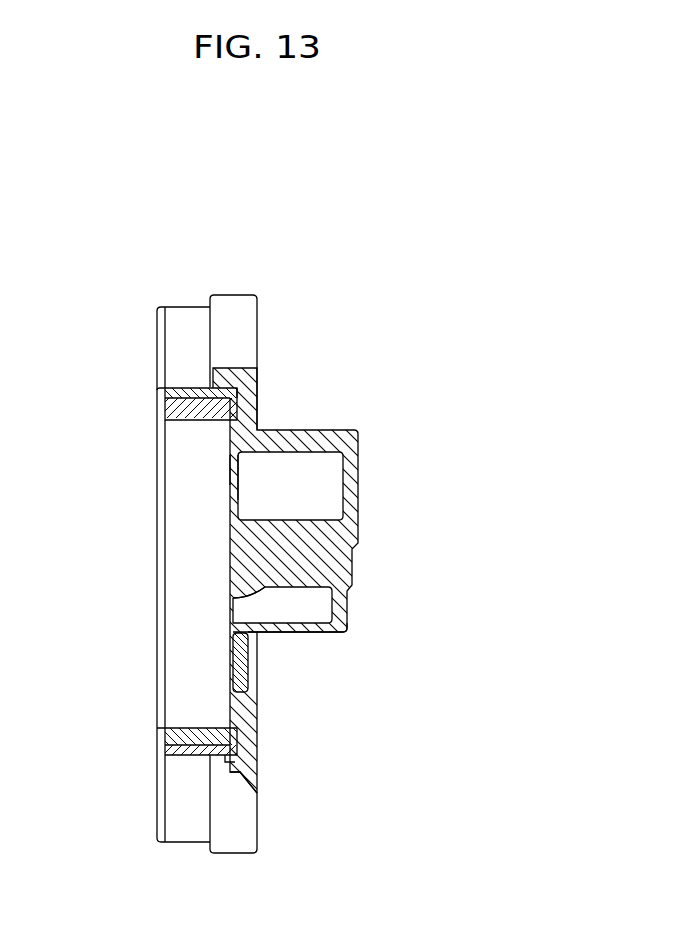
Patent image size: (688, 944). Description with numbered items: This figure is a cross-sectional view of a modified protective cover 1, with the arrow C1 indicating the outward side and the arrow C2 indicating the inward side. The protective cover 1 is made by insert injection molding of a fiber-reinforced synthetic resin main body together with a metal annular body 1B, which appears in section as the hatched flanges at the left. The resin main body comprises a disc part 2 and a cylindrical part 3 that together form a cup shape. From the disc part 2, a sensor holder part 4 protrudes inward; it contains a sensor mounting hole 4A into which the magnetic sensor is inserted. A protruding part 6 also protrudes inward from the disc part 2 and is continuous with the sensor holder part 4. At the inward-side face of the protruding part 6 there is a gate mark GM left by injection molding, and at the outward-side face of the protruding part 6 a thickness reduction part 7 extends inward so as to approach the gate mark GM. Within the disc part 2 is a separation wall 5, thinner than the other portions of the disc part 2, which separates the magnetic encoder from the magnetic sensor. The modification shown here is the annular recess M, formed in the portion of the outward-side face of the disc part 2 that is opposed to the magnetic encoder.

The protective cover 1 is at (352, 331).
The metal annular body 1B is at (187, 726).
The disc part 2 is at (250, 673).
The cylindrical part 3 is at (241, 786).
The sensor holder part 4 is at (305, 428).
The sensor mounting hole 4A is at (352, 461).
The separation wall 5 is at (229, 478).
The protruding part 6 is at (318, 637).
The thickness reduction part 7 is at (262, 590).
The gate mark GM is at (352, 605).
The annular recess M is at (226, 469).
The arrow indicating outward side C1 is at (210, 263).
The arrow indicating inward side C2 is at (327, 263).